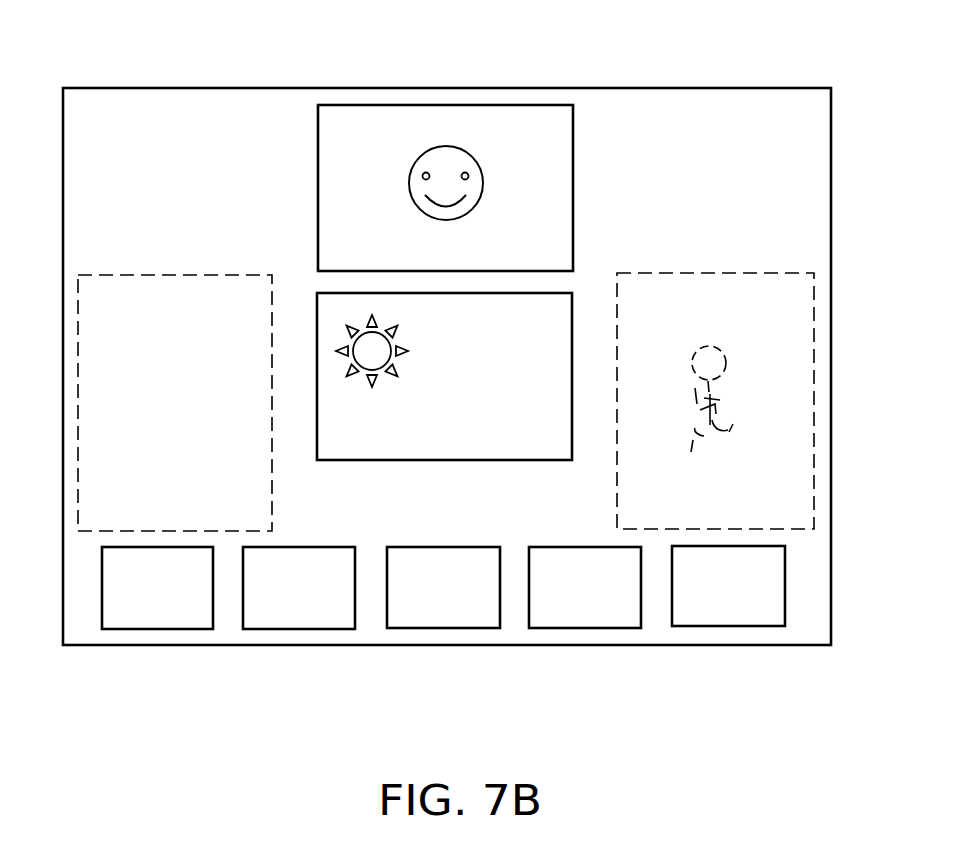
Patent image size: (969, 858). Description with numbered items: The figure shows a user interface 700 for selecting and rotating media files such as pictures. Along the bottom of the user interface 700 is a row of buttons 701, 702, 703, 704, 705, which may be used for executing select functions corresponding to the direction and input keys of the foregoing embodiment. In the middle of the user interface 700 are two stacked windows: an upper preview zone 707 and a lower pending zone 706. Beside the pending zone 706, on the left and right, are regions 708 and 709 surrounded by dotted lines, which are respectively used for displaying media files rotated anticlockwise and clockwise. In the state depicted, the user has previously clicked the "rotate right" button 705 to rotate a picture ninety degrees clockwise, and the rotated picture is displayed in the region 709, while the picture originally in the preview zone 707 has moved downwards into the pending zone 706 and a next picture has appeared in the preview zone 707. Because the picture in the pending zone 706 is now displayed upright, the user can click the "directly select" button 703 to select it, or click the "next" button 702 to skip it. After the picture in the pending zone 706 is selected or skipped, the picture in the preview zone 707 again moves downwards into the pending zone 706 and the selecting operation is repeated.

The user interface 700 is at (443, 88).
The button 701 is at (157, 629).
The next button 702 is at (298, 629).
The directly select button 703 is at (442, 628).
The button 704 is at (585, 628).
The rotate right button 705 is at (727, 626).
The pending zone 706 is at (478, 460).
The preview zone 707 is at (573, 135).
The region 708 is at (143, 275).
The region 709 is at (665, 273).